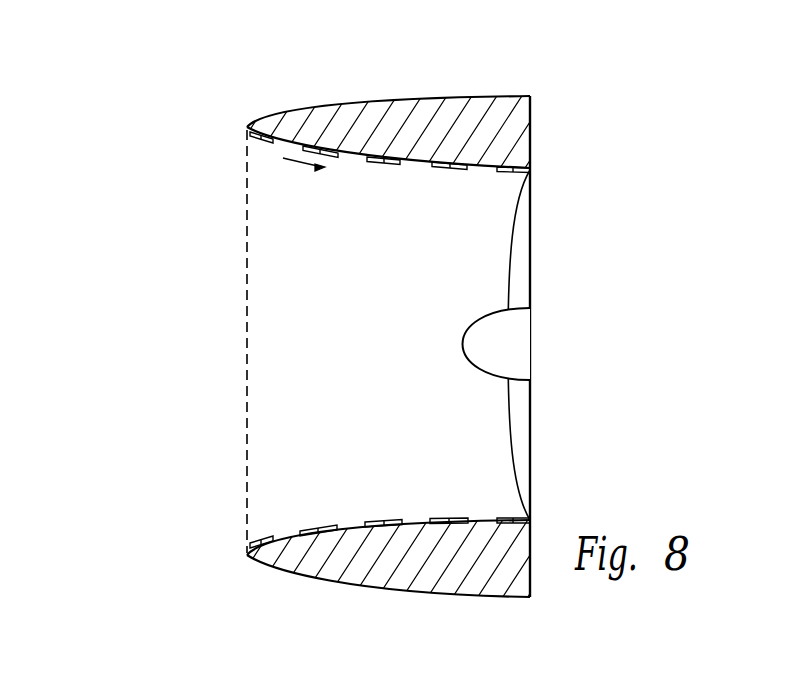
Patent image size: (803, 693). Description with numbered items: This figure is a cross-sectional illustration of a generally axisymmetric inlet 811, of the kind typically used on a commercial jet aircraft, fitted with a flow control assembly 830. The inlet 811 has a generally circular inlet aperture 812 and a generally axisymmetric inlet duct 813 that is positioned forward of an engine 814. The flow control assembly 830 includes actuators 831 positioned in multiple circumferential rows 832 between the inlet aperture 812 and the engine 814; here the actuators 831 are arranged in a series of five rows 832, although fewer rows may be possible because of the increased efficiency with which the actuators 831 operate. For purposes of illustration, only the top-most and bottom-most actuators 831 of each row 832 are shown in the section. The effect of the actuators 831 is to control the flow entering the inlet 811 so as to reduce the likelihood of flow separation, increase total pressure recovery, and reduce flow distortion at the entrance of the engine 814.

The flow control assembly 830 is at (217, 109).
The inlet 811 is at (174, 391).
The inlet aperture 812 is at (247, 275).
The inlet duct 813 is at (354, 155).
The engine 814 is at (510, 275).
The actuators 831 is at (450, 165).
The circumferential rows 832 is at (263, 129).